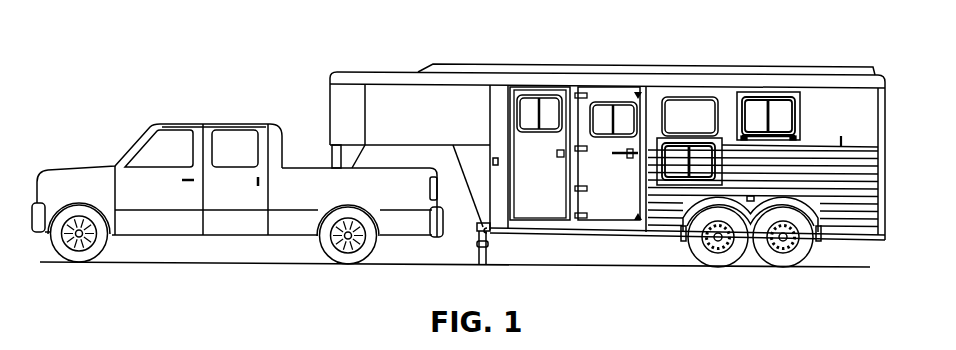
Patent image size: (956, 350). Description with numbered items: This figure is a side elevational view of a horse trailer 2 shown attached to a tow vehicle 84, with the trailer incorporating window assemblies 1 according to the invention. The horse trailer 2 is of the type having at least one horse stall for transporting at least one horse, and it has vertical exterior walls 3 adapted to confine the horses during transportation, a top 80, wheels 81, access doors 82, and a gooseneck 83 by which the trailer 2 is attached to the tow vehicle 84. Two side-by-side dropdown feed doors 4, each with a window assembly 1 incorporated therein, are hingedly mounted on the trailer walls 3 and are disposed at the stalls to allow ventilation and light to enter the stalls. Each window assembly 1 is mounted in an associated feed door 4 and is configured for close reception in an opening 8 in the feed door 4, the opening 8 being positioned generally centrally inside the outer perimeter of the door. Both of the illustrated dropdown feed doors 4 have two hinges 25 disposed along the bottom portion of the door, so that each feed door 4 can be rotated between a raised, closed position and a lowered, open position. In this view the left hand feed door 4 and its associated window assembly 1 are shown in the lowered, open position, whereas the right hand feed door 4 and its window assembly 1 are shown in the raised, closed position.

The window assembly 1 is at (758, 92).
The horse trailer 2 is at (360, 64).
The exterior walls 3 is at (868, 103).
The dropdown feed door 4 is at (797, 102).
The opening 8 is at (739, 115).
The hinges 25 is at (797, 139).
The top 80 is at (586, 64).
The wheels 81 is at (778, 258).
The access doors 82 is at (602, 217).
The gooseneck 83 is at (328, 160).
The tow vehicle 84 is at (41, 175).